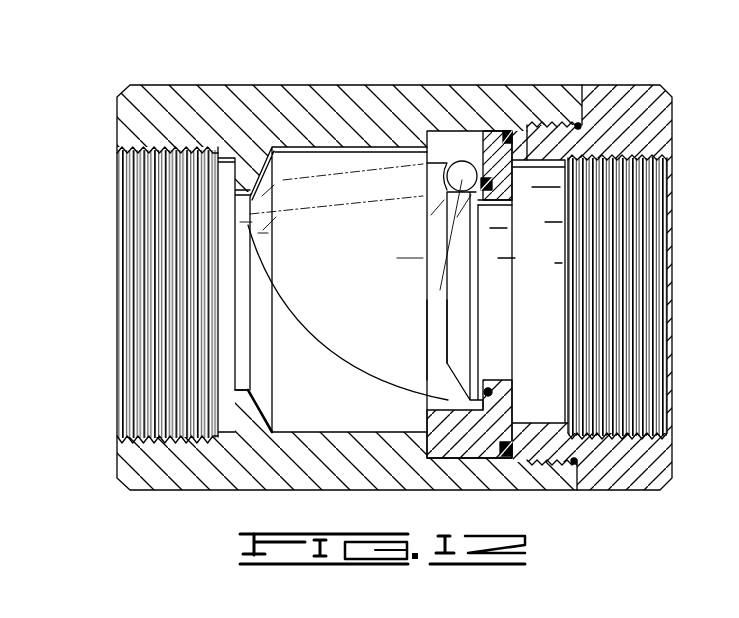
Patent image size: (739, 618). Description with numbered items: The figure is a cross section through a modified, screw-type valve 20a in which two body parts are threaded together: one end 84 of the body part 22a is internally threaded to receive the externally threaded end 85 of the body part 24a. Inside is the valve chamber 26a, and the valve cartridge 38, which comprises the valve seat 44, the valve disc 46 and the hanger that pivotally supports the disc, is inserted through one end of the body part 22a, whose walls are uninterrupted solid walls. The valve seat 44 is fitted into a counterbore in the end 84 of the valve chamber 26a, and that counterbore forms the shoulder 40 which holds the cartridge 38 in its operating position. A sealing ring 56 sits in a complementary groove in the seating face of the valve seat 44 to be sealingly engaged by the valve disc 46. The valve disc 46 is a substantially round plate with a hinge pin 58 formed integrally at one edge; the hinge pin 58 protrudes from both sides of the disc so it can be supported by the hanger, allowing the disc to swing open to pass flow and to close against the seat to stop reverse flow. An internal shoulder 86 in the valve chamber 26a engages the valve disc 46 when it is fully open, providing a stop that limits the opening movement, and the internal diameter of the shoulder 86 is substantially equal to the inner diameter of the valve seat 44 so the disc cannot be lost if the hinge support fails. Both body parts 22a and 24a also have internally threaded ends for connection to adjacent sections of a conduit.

The screw-type valve 20a is at (118, 84).
The body part 22a is at (312, 259).
The body part 24a is at (620, 97).
The valve chamber 26a is at (345, 272).
The valve cartridge 38 is at (427, 343).
The circumferential shoulder 40 is at (418, 131).
The valve seat 44 is at (493, 417).
The valve disc 46 is at (453, 295).
The sealing ring 56 is at (490, 392).
The hinge pin 58 is at (427, 213).
The end of the body part 84 is at (568, 87).
The externally threaded end 85 is at (535, 150).
The internal shoulder 86 is at (245, 405).